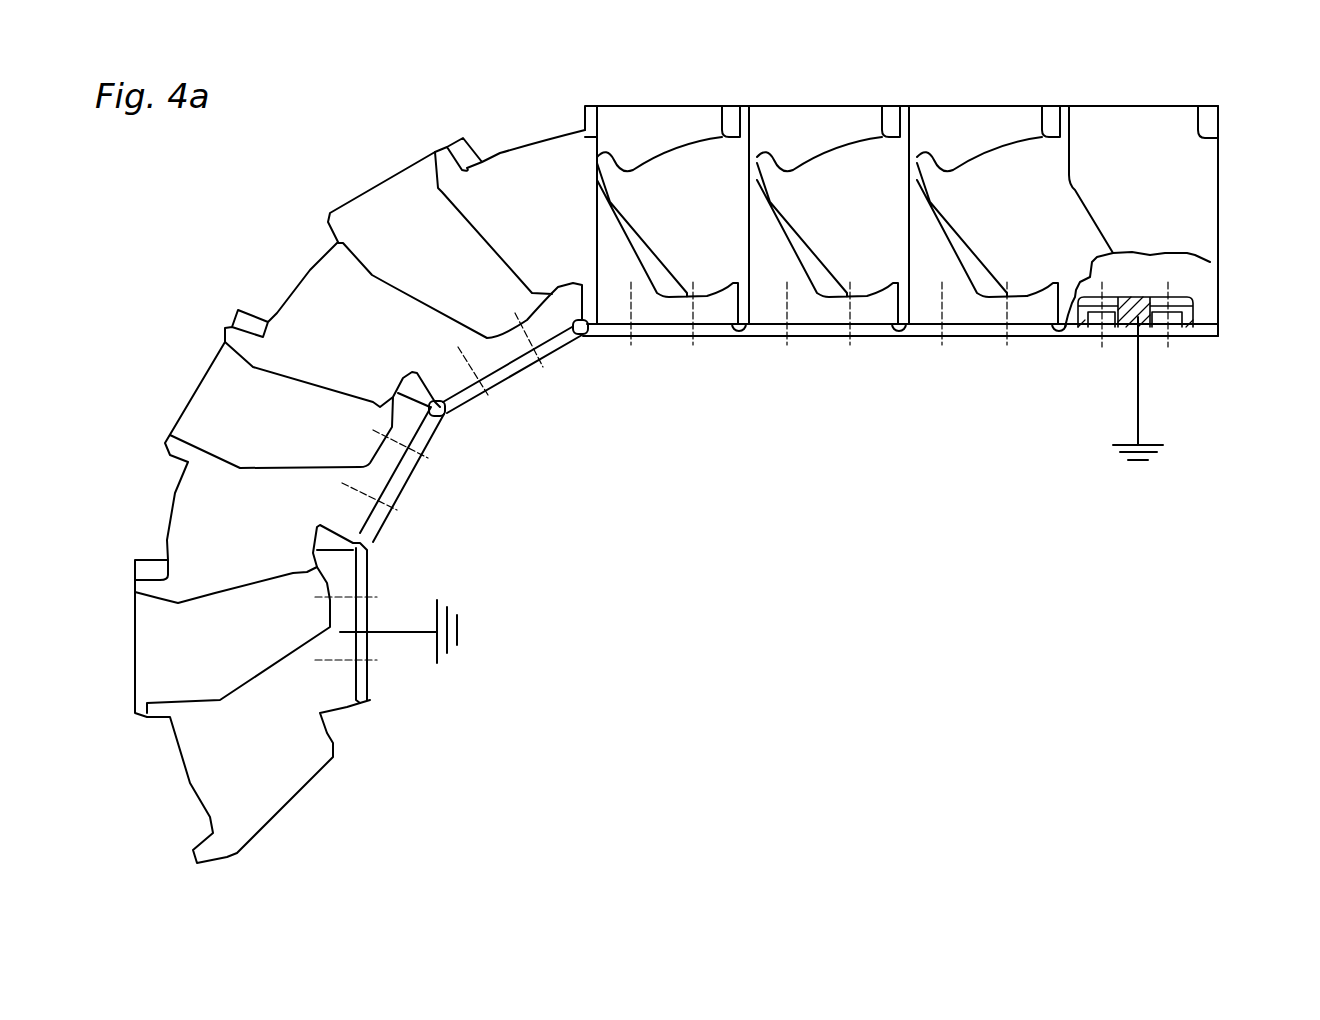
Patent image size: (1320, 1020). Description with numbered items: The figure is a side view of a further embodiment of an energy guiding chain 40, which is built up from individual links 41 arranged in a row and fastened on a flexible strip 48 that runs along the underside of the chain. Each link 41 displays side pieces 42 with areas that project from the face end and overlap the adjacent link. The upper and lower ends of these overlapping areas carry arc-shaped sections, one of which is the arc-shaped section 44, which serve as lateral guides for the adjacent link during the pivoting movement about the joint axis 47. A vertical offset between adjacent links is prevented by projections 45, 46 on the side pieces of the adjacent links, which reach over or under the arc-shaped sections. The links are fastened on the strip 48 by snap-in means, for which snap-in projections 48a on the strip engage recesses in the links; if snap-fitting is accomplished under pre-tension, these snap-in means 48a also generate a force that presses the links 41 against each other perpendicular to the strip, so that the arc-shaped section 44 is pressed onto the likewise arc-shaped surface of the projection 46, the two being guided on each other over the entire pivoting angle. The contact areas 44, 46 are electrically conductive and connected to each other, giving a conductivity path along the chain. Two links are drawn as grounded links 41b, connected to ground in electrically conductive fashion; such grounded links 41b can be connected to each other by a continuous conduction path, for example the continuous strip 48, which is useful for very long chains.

The chain 40 is at (768, 400).
The link 41 is at (616, 305).
The grounded link 41b is at (1205, 242).
The side piece 42 is at (968, 120).
The arc-shaped section 44 is at (675, 138).
The projection 45 is at (1208, 118).
The projection 46 is at (1045, 296).
The joint axis 47 is at (898, 343).
The flexible strip 48 is at (836, 330).
The snap-in projection 48a is at (1164, 318).